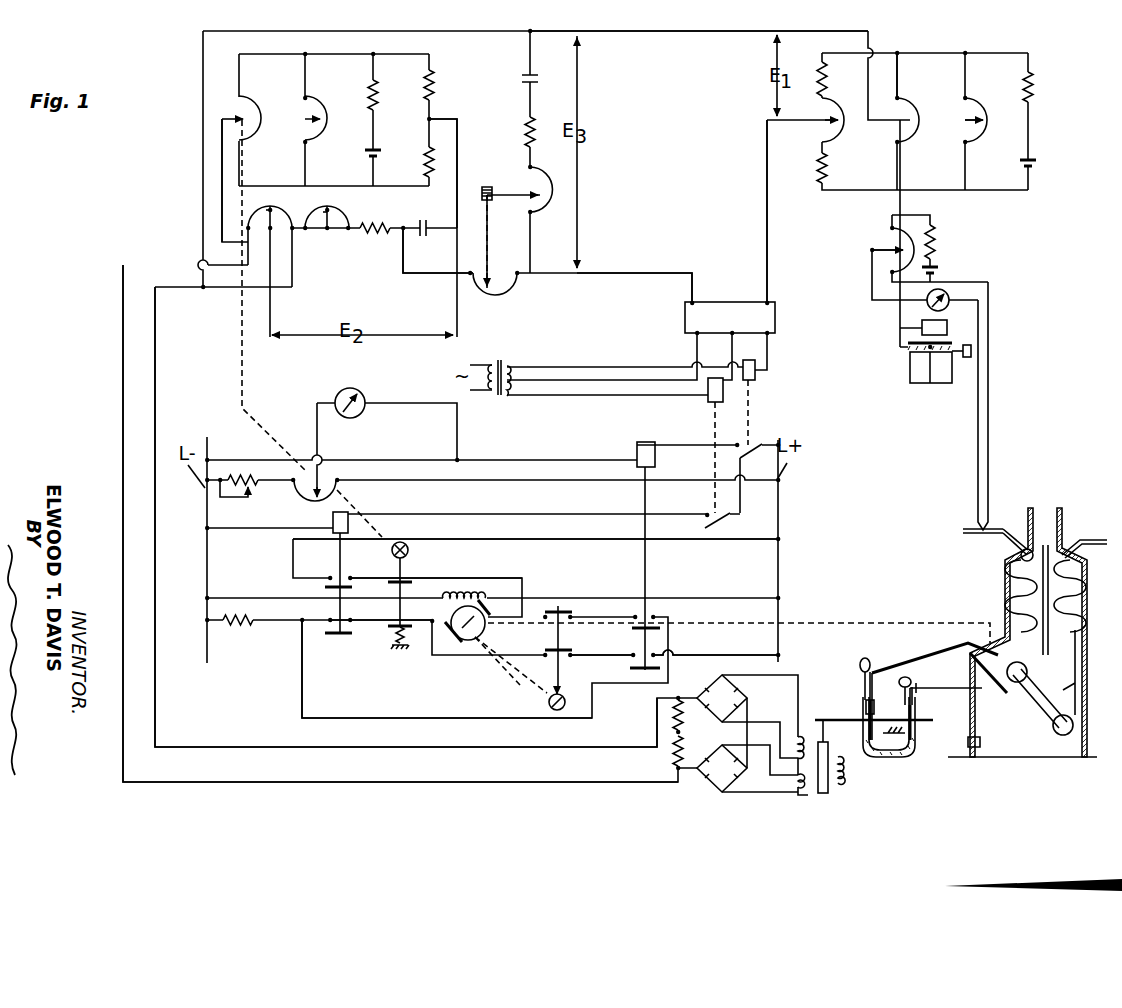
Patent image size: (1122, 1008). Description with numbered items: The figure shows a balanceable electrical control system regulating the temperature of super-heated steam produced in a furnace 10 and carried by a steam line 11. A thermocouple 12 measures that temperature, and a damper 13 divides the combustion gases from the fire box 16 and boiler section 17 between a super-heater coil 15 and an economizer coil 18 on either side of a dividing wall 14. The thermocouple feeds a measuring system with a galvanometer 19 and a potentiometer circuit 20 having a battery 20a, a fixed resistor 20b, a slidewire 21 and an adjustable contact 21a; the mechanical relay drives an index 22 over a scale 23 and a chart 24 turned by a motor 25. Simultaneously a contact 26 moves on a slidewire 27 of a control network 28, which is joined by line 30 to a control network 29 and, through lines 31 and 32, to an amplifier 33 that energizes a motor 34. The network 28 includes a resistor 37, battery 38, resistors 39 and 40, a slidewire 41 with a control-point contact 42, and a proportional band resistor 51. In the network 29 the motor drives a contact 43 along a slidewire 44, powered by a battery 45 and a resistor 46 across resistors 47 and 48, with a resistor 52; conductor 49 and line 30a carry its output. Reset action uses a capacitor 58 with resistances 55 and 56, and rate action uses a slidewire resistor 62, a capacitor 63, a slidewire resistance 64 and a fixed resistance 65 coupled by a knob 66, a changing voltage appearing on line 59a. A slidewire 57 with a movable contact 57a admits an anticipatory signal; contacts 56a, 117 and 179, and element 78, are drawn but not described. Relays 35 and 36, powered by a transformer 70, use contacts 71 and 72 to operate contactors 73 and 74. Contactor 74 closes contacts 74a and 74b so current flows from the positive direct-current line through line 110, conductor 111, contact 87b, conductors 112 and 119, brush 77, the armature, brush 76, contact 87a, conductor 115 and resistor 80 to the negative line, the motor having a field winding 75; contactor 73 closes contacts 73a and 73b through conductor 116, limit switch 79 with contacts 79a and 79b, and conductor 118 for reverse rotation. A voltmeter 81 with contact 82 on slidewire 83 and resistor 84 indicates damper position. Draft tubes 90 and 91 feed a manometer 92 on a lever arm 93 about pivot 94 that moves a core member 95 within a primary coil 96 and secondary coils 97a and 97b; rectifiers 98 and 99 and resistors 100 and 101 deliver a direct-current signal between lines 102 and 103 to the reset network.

The furnace 10 is at (1022, 608).
The steam line 11 is at (993, 527).
The thermocouple 12 is at (977, 546).
The damper 13 is at (1045, 640).
The dividing wall 14 is at (1052, 548).
The super-heater coil 15 is at (1010, 592).
The fire box 16 is at (988, 690).
The boiler section 17 is at (1032, 712).
The economizer coil 18 is at (1075, 607).
The galvanometer 19 is at (945, 290).
The potentiometer circuit 20 is at (922, 225).
The battery 20a is at (935, 266).
The fixed resistor 20b is at (936, 247).
The slidewire 21 is at (893, 240).
The adjustable contact 21a is at (905, 250).
The index 22 is at (930, 350).
The scale 23 is at (912, 343).
The calibrated chart 24 is at (920, 377).
The motor 25 is at (975, 352).
The adjustable contact 26 is at (910, 114).
The slidewire 27 is at (903, 100).
The control network 28 is at (925, 107).
The control network 29 is at (334, 109).
The line 30 is at (677, 33).
The line 30a is at (222, 175).
The line 31 is at (628, 272).
The line 32 is at (766, 208).
The amplifier 33 is at (730, 317).
The motor 34 is at (473, 641).
The relay 35 is at (709, 399).
The relay 36 is at (756, 369).
The resistor 37 is at (1032, 92).
The battery 38 is at (1035, 155).
The resistor 39 is at (820, 78).
The resistor 40 is at (815, 172).
The slidewire 41 is at (838, 110).
The movable contact 42 is at (832, 118).
The contact 43 is at (249, 124).
The slidewire 44 is at (252, 114).
The battery 45 is at (382, 153).
The resistor 46 is at (378, 96).
The resistor 47 is at (425, 85).
The resistor 48 is at (426, 162).
The conductor 49 is at (460, 120).
The slidewire resistor 51 is at (978, 105).
The slidewire resistor 52 is at (318, 128).
The fixed resistance 55 is at (373, 236).
The variable resistance 56 is at (341, 214).
The grid 56a is at (326, 226).
The slidewire 57 is at (284, 214).
The movable contact 57a is at (268, 208).
The reset capacitor 58 is at (424, 222).
The line 59a is at (438, 277).
The slidewire resistor 62 is at (509, 290).
The capacitor 63 is at (527, 80).
The slidewire resistance 64 is at (548, 184).
The fixed resistance 65 is at (524, 136).
The knob 66 is at (488, 186).
The transformer 70 is at (503, 362).
The contact 71 is at (728, 517).
The contact 72 is at (754, 462).
The contactor 73 is at (350, 514).
The contact 73a is at (331, 582).
The contact 73b is at (336, 640).
The contactor 74 is at (635, 451).
The contact 74a is at (660, 628).
The contact 74b is at (645, 672).
The field winding 75 is at (478, 592).
The brush 76 is at (487, 611).
The brush 77 is at (458, 644).
The limit switch 78 is at (548, 703).
The limit switch 79 is at (394, 567).
The contact 79a is at (412, 578).
The contact 79b is at (406, 650).
The resistor 80 is at (235, 628).
The voltmeter 81 is at (360, 390).
The adjustable contact 82 is at (320, 482).
The slidewire 83 is at (295, 496).
The voltage-dropping resistor 84 is at (254, 486).
The contact 87a is at (560, 608).
The contact 87b is at (572, 649).
The draft tube 90 is at (945, 648).
The draft tube 91 is at (937, 688).
The manometer 92 is at (896, 758).
The lever arm 93 is at (840, 718).
The pivot 94 is at (897, 727).
The core member 95 is at (828, 752).
The primary coil 96 is at (850, 785).
The secondary coil 97a is at (797, 738).
The secondary coil 97b is at (797, 787).
The full-wave rectifier 98 is at (712, 693).
The full-wave rectifier 99 is at (711, 776).
The voltage-dividing resistor 100 is at (675, 708).
The voltage-dividing resistor 101 is at (675, 745).
The line 102 is at (232, 745).
The line 103 is at (275, 782).
The line 110 is at (728, 653).
The conductor 111 is at (613, 657).
The conductor 112 is at (504, 664).
The conductor 115 is at (385, 716).
The conductor 116 is at (678, 540).
The conductor 117 is at (385, 601).
The conductor 118 is at (458, 577).
The conductor 119 is at (440, 620).
The signal lamp 179 is at (408, 538).